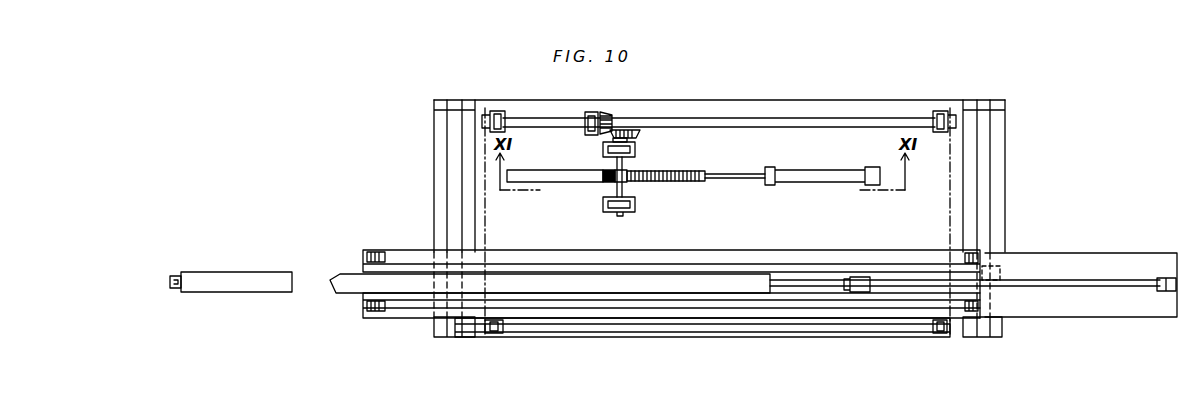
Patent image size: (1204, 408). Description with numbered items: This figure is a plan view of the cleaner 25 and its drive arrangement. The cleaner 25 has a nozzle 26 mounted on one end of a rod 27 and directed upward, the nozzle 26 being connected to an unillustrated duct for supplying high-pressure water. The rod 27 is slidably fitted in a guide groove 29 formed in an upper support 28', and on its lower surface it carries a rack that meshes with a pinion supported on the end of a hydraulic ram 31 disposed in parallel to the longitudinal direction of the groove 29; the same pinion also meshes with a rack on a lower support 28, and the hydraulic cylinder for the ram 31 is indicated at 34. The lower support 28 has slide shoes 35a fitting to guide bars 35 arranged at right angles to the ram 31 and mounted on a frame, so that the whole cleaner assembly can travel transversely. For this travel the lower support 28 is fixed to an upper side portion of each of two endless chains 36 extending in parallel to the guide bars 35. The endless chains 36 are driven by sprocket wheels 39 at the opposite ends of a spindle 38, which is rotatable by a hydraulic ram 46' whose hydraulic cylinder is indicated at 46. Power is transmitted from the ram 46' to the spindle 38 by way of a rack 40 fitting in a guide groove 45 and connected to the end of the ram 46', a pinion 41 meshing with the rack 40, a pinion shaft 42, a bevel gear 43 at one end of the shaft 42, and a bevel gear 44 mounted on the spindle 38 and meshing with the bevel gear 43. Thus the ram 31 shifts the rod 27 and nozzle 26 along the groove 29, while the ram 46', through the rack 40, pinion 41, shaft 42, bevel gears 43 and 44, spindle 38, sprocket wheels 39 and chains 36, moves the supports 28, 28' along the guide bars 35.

The cleaner 25 is at (330, 224).
The nozzle 26 is at (176, 275).
The rod 27 is at (250, 282).
The lower support 28 is at (671, 332).
The upper support 28' is at (702, 336).
The guide groove 29 is at (612, 292).
The hydraulic ram 31 is at (815, 282).
The hydraulic cylinder 34 is at (1097, 283).
The guide bars 35 is at (455, 160).
The slide shoes 35a is at (998, 264).
The endless chains 36 is at (488, 208).
The spindle 38 is at (750, 122).
The sprocket wheels 39 is at (487, 112).
The rack 40 is at (690, 183).
The pinion 41 is at (628, 160).
The pinion shaft 42 is at (606, 160).
The bevel gear 43 is at (636, 137).
The bevel gear 44 is at (605, 114).
The guide groove 45 is at (580, 180).
The hydraulic cylinder 46 is at (822, 191).
The hydraulic ram 46' is at (735, 192).